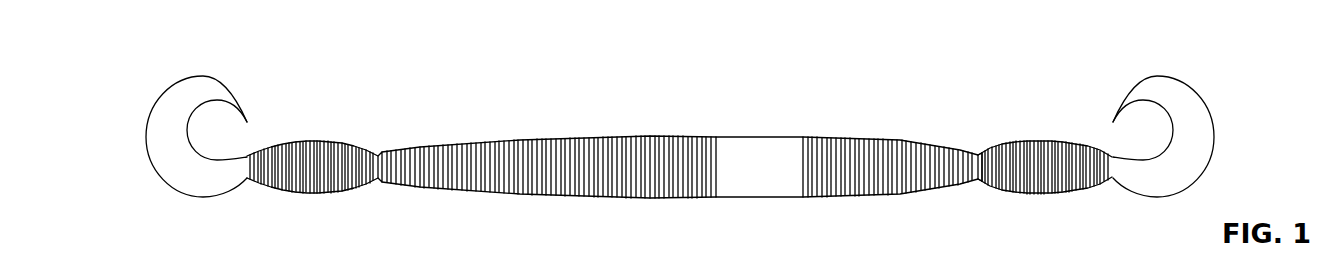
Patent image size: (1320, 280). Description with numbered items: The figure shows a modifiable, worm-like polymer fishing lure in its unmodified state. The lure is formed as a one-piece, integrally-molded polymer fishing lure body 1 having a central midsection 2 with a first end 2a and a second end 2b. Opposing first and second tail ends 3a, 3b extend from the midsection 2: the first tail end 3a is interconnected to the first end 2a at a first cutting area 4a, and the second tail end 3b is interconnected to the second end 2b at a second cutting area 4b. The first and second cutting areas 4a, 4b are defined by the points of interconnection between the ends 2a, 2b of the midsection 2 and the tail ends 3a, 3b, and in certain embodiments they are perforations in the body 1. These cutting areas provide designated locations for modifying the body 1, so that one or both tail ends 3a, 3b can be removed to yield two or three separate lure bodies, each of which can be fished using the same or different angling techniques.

The polymer fishing lure body 1 is at (1215, 72).
The midsection 2 is at (982, 208).
The first end of the midsection 2a is at (940, 142).
The second end of the midsection 2b is at (392, 148).
The first tail end 3a is at (1067, 192).
The second tail end 3b is at (320, 192).
The first cutting area 4a is at (978, 180).
The second cutting area 4b is at (380, 183).